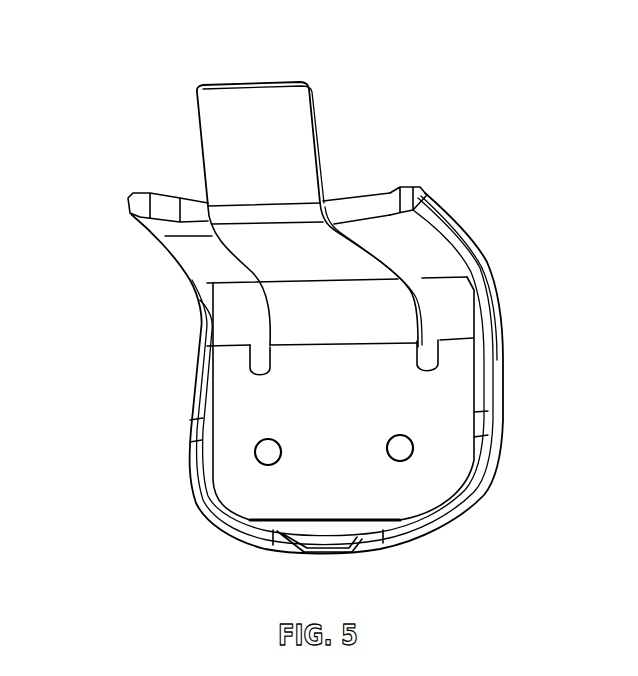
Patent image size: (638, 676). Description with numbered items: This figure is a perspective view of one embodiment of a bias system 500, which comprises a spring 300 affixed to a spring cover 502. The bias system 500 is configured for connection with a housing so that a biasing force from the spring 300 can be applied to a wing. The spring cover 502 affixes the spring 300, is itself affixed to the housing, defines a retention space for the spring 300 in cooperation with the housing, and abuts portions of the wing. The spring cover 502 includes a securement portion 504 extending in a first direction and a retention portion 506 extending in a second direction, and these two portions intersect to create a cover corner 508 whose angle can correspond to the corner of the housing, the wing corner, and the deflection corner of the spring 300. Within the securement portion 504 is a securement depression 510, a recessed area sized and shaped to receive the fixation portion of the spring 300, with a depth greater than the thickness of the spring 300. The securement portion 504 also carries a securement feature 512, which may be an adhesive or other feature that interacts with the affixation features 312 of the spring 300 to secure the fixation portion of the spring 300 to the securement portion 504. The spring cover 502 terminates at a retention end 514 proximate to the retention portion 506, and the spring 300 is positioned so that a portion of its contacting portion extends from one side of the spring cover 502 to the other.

The bias system 500 is at (298, 285).
The spring 300 is at (202, 151).
The retention end 514 is at (353, 189).
The retention portion 506 is at (443, 203).
The cover corner 508 is at (497, 268).
The securement portion 504 is at (499, 431).
The spring cover 502 is at (470, 508).
The securement depression 510 is at (228, 318).
The securement feature 512 is at (208, 480).
The affixation features 312 is at (192, 498).